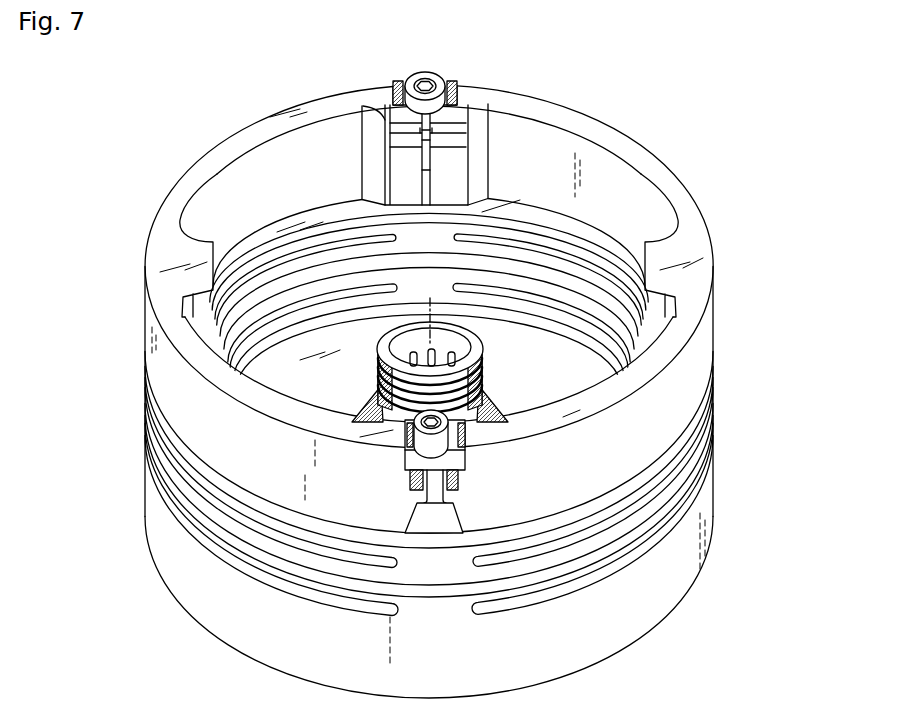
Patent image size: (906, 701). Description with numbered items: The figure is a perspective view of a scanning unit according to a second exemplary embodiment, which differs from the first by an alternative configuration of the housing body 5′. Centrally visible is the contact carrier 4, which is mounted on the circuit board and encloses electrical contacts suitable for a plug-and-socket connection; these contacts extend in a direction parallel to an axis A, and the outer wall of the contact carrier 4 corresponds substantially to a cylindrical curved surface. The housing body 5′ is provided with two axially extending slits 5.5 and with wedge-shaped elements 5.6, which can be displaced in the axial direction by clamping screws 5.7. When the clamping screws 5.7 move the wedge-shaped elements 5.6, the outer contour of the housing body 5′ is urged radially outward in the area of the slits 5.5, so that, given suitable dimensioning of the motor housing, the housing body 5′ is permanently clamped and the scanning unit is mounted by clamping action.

The contact carrier 4 is at (478, 368).
The housing body 5′ is at (663, 597).
The axially extending slits 5.5 is at (423, 168).
The wedge-shaped elements 5.6 is at (448, 460).
The clamping screws 5.7 is at (447, 82).
The axis A is at (422, 318).